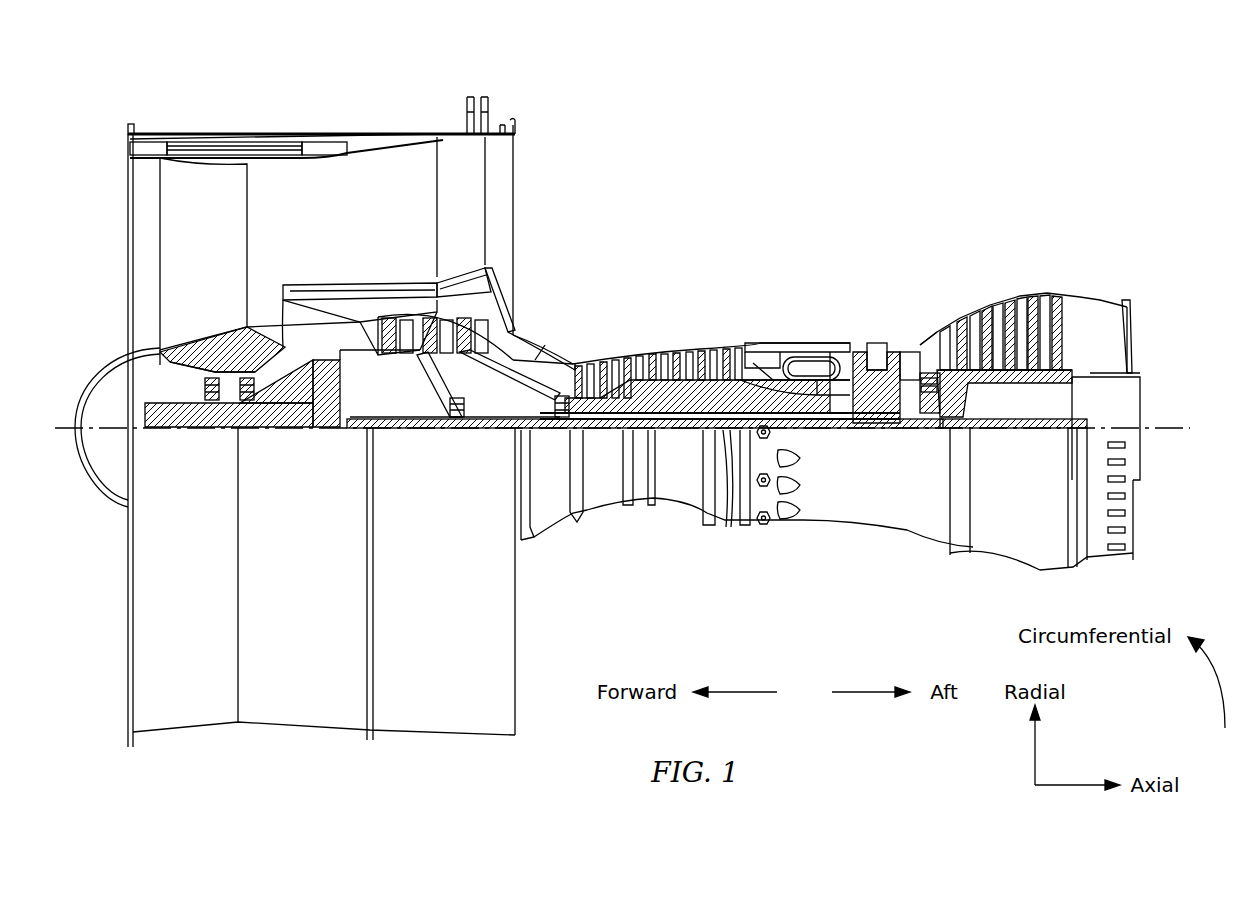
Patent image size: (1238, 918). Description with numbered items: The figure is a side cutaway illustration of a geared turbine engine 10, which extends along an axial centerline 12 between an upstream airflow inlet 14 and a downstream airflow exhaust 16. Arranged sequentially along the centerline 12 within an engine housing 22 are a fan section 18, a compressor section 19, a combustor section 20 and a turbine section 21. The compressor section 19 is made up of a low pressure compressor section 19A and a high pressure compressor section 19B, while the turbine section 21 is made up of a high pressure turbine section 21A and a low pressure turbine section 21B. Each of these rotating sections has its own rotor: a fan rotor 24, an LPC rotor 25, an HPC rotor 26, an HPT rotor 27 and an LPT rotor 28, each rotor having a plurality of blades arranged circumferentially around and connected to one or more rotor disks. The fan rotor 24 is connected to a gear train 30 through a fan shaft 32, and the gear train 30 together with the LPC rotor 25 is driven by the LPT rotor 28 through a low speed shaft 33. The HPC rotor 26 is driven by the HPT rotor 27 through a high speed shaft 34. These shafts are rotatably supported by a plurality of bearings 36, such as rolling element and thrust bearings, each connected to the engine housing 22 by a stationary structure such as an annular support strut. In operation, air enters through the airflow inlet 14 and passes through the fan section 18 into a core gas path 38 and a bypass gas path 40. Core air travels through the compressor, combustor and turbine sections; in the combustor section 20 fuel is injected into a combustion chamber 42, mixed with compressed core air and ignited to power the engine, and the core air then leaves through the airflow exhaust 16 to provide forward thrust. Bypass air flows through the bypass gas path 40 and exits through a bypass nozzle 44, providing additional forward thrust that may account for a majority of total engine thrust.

The geared turbine engine 10 is at (101, 114).
The axial centerline 12 is at (1192, 432).
The airflow inlet 14 is at (128, 205).
The airflow exhaust 16 is at (1130, 332).
The fan section 18 is at (290, 110).
The compressor section 19 is at (728, 53).
The low pressure compressor section 19A is at (517, 95).
The high pressure compressor section 19B is at (543, 275).
The combustor section 20 is at (745, 275).
The turbine section 21 is at (850, 210).
The high pressure turbine section 21A is at (920, 275).
The low pressure turbine section 21B is at (937, 275).
The engine housing 22 is at (532, 538).
The fan rotor 24 is at (140, 352).
The LPC rotor 25 is at (420, 382).
The HPC rotor 26 is at (680, 392).
The HPT rotor 27 is at (870, 402).
The LPT rotor 28 is at (1010, 381).
The gear train 30 is at (325, 428).
The fan shaft 32 is at (190, 432).
The low speed shaft 33 is at (728, 462).
The high speed shaft 34 is at (810, 419).
The bearings 36 is at (248, 402).
The core gas path 38 is at (540, 357).
The bypass gas path 40 is at (370, 218).
The combustion chamber 42 is at (802, 372).
The bypass nozzle 44 is at (515, 185).